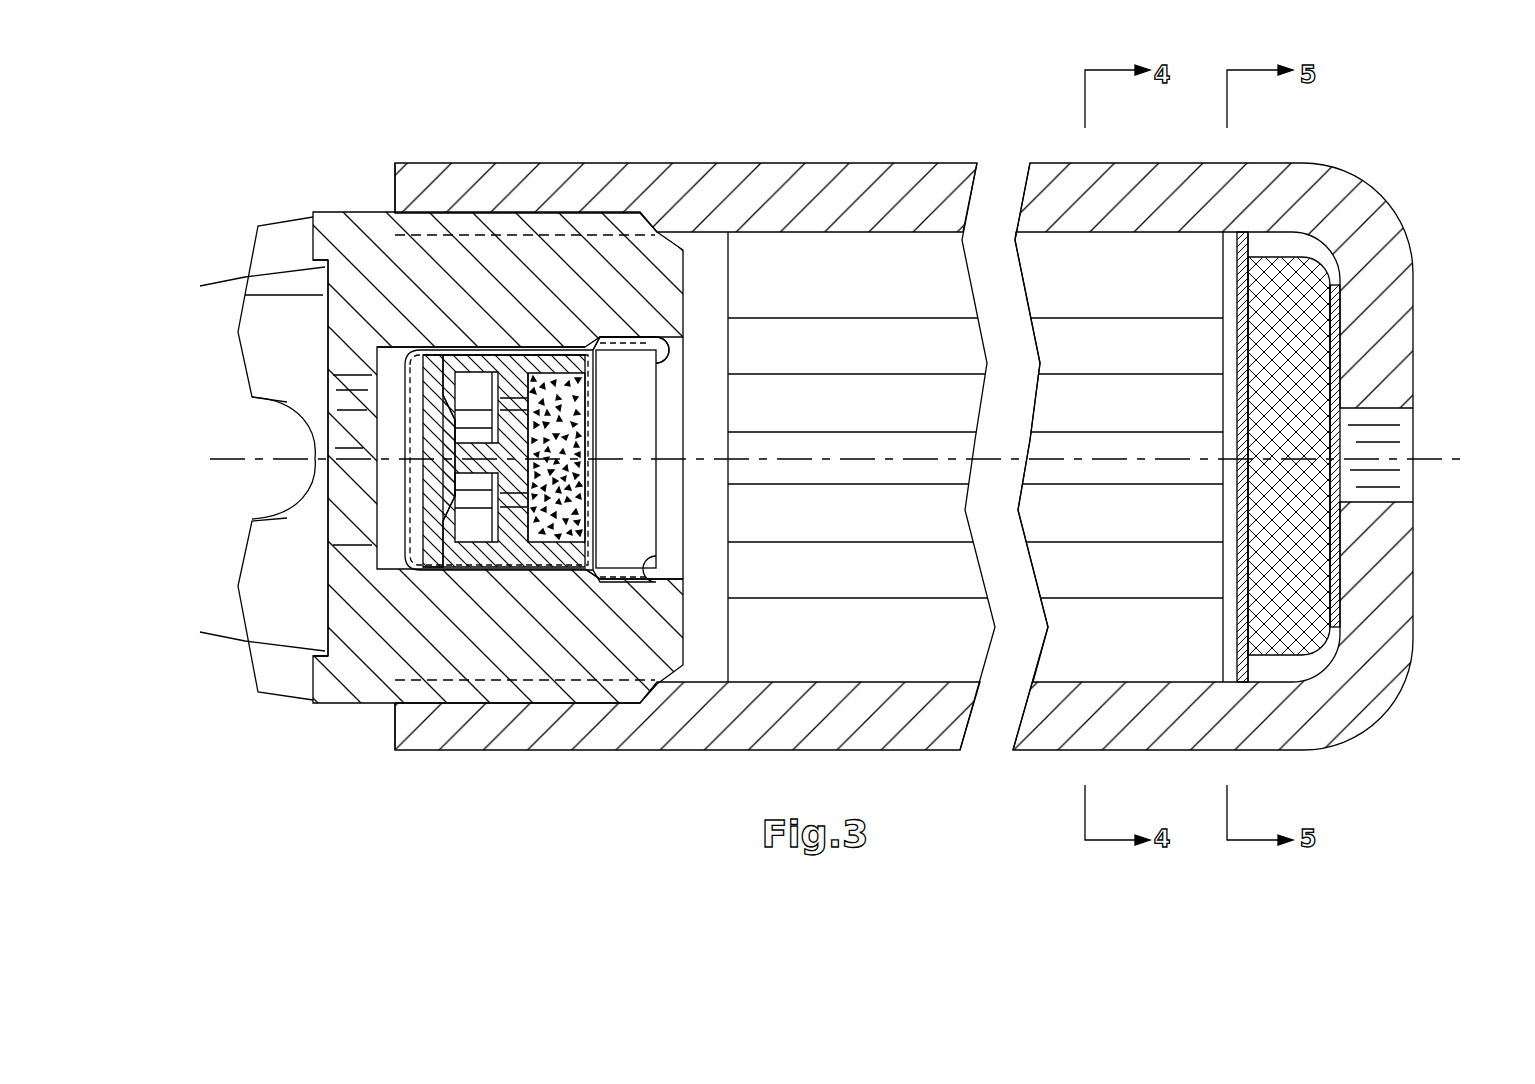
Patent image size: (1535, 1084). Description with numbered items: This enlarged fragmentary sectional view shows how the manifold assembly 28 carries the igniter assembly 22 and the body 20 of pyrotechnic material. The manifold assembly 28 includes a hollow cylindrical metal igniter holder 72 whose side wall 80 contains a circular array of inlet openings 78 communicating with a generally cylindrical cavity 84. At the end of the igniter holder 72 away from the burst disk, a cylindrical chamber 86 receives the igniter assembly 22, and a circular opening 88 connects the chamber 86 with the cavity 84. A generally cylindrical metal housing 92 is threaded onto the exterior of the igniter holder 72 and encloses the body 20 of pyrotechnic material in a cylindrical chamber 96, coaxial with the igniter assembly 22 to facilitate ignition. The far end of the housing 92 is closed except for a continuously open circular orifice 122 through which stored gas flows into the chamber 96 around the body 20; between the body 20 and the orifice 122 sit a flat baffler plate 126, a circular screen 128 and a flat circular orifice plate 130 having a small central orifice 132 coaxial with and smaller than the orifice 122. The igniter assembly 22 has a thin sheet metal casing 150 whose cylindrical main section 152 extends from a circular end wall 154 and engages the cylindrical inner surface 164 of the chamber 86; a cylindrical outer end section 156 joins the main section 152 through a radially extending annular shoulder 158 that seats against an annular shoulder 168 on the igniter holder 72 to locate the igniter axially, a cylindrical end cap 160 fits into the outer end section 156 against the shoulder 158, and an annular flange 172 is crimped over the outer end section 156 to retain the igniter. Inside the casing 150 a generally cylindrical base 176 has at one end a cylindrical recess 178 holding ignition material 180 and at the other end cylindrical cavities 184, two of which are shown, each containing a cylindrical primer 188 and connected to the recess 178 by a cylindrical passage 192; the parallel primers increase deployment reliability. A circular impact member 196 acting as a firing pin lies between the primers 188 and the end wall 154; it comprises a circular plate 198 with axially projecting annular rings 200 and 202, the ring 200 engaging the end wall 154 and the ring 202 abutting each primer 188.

The body of pyrotechnic material 20 is at (1063, 265).
The igniter assembly 22 is at (531, 330).
The manifold assembly 28 is at (321, 205).
The igniter holder 72 is at (308, 716).
The inlet openings 78 is at (290, 238).
The side wall 80 is at (370, 223).
The cavity 84 is at (325, 295).
The chamber 86 is at (388, 363).
The circular opening 88 is at (340, 446).
The housing 92 is at (1050, 737).
The housing chamber 96 is at (710, 667).
The orifice 122 is at (1380, 437).
The baffler plate 126 is at (1247, 237).
The screen 128 is at (1286, 270).
The orifice plate 130 is at (1333, 318).
The central orifice 132 is at (1333, 465).
The sheet metal casing 150 is at (392, 500).
The cylindrical main section 152 is at (550, 343).
The circular end wall 154 is at (425, 397).
The cylindrical outer end section 156 is at (620, 590).
The annular shoulder 158 is at (628, 592).
The end cap 160 is at (640, 437).
The cylindrical inner surface 164 is at (350, 660).
The annular shoulder 168 is at (598, 325).
The annular flange 172 is at (668, 365).
The base 176 is at (515, 550).
The cylindrical recess 178 is at (565, 560).
The ignition material 180 is at (545, 486).
The cylindrical cavities 184 is at (473, 372).
The primers 188 is at (450, 398).
The cylindrical passages 192 is at (562, 410).
The impact member 196 is at (395, 471).
The circular plate 198 is at (440, 440).
The annular ring 200 is at (410, 522).
The annular ring 202 is at (425, 545).